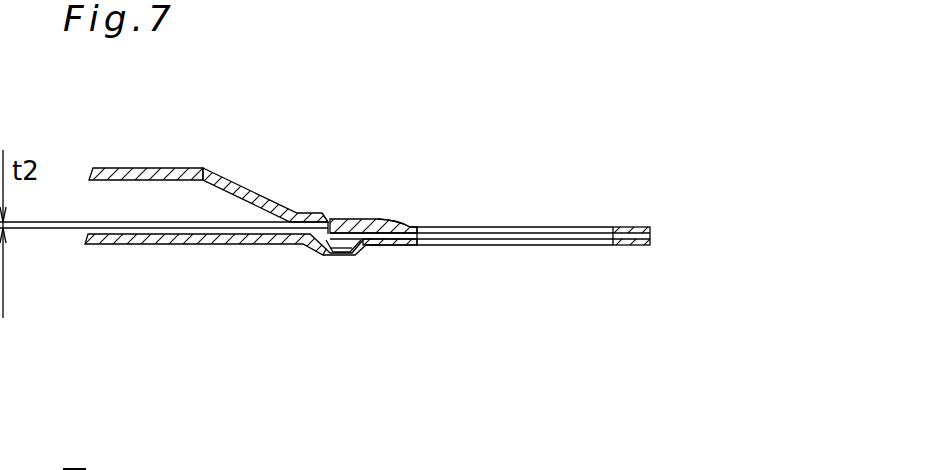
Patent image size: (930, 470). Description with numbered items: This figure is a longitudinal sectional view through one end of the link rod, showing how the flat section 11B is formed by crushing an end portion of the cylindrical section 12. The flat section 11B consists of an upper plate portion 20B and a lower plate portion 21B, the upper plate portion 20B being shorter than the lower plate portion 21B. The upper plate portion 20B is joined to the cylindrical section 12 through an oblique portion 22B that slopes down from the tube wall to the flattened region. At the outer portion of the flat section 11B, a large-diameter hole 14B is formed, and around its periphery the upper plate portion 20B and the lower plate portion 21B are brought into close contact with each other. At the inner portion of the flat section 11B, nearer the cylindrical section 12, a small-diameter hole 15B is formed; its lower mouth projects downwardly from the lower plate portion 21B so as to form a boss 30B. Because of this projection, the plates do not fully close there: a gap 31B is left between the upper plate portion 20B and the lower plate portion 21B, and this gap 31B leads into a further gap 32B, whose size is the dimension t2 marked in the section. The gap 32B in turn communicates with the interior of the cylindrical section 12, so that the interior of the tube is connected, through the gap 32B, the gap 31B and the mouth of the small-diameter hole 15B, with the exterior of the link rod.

The cylindrical section 12 is at (135, 168).
The oblique portion 22B is at (236, 184).
The small-diameter hole 15B is at (339, 216).
The upper plate portion 20B is at (407, 225).
The large-diameter hole 14B is at (421, 233).
The flat section 11B is at (630, 227).
The gap 32B is at (302, 229).
The gap 31B is at (343, 257).
The boss 30B is at (363, 248).
The lower plate portion 21B is at (412, 247).